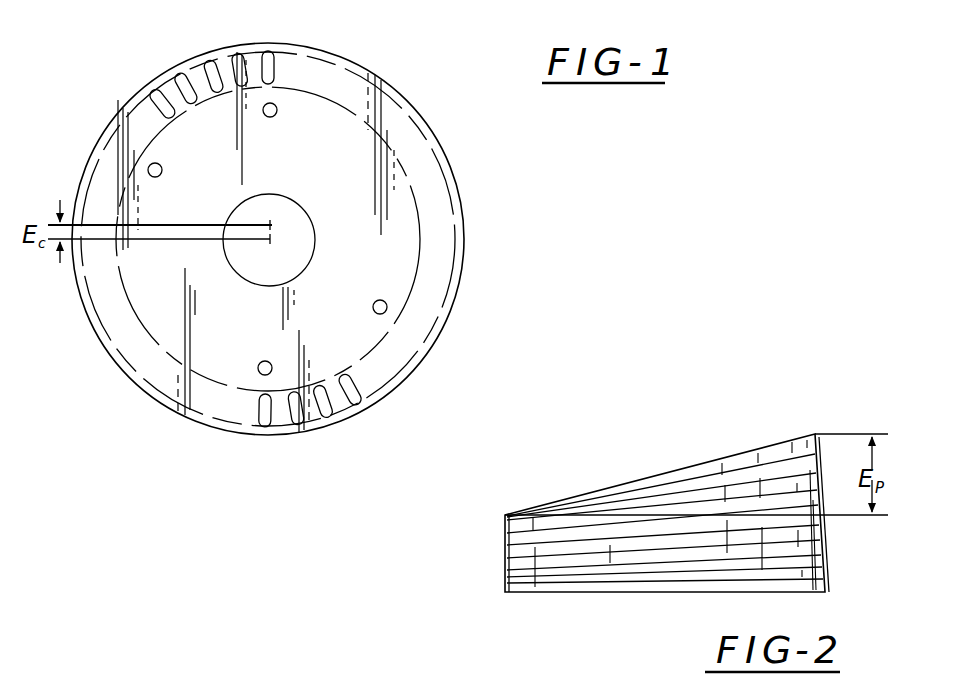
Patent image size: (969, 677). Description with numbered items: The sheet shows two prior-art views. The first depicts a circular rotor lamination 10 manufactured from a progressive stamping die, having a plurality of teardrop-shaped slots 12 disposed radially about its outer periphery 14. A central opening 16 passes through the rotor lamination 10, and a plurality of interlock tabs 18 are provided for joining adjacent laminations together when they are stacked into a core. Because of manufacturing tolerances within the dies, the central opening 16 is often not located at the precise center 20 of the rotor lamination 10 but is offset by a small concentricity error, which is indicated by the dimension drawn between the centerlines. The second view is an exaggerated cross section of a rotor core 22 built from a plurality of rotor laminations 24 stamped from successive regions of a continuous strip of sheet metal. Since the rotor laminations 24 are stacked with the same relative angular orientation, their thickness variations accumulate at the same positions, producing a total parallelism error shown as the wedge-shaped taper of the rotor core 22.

In FIG. 1, the rotor lamination 10 is at (472, 201).
In FIG. 1, the teardrop-shaped slots 12 is at (219, 52).
In FIG. 1, the outer periphery 14 is at (441, 333).
In FIG. 1, the central opening 16 is at (316, 230).
In FIG. 1, the interlock tabs 18 is at (162, 172).
In FIG. 1, the precise center 20 is at (271, 222).
In FIG. 2, the rotor core 22 is at (618, 519).
In FIG. 2, the rotor laminations 24 is at (505, 521).